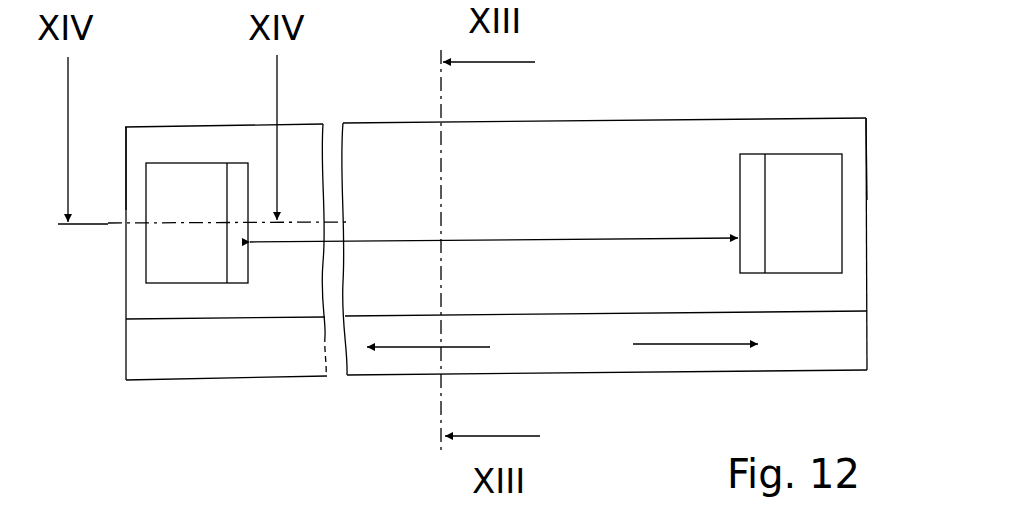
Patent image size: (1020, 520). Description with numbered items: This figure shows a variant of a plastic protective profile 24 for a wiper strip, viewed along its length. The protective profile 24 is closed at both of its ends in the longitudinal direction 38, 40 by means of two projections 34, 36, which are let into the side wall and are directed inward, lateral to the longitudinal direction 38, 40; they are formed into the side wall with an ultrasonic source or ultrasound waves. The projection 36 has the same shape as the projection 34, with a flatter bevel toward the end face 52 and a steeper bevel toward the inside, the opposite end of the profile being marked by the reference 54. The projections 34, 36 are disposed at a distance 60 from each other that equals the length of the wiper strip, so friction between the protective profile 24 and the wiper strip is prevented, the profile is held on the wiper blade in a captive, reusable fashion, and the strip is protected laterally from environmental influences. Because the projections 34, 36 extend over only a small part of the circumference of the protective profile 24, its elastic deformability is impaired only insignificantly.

The protective profile 24 is at (422, 185).
The projection 34 is at (209, 265).
The projection 36 is at (783, 173).
The longitudinal direction 38 is at (407, 348).
The longitudinal direction 40 is at (700, 345).
The end face 52 is at (879, 164).
The plate end region 54 is at (113, 177).
The distance 60 is at (578, 238).